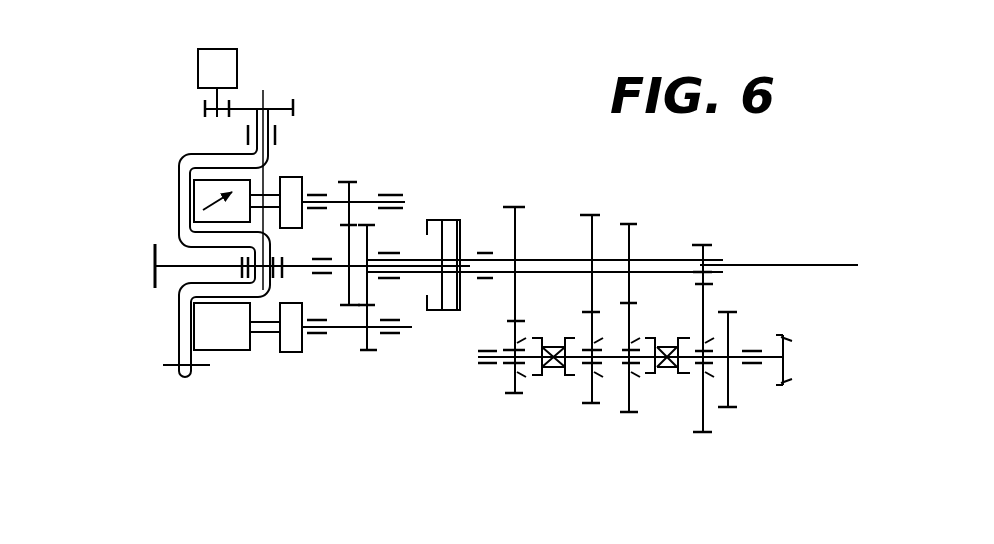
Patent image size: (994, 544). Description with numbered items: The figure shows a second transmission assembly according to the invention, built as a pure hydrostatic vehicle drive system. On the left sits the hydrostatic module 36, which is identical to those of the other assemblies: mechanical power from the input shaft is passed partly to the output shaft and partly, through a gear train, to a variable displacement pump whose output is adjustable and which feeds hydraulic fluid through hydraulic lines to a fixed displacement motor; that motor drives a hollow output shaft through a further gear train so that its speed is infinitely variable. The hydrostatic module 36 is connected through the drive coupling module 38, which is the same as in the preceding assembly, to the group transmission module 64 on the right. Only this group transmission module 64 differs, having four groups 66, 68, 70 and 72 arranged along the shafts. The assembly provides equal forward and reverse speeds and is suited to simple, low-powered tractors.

The hydrostatic module 36 is at (278, 413).
The drive coupling module 38 is at (423, 422).
The group transmission module 64 is at (562, 463).
The group 66 is at (512, 418).
The group 68 is at (590, 417).
The group 70 is at (631, 418).
The group 72 is at (704, 442).